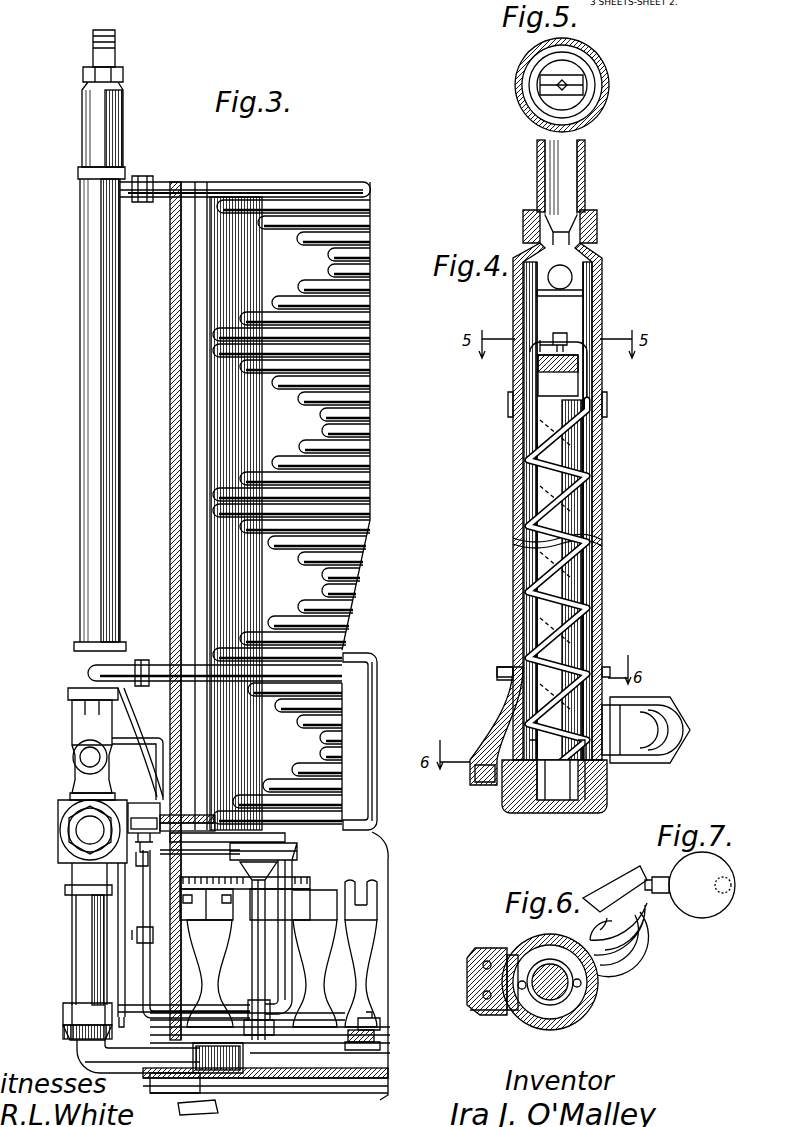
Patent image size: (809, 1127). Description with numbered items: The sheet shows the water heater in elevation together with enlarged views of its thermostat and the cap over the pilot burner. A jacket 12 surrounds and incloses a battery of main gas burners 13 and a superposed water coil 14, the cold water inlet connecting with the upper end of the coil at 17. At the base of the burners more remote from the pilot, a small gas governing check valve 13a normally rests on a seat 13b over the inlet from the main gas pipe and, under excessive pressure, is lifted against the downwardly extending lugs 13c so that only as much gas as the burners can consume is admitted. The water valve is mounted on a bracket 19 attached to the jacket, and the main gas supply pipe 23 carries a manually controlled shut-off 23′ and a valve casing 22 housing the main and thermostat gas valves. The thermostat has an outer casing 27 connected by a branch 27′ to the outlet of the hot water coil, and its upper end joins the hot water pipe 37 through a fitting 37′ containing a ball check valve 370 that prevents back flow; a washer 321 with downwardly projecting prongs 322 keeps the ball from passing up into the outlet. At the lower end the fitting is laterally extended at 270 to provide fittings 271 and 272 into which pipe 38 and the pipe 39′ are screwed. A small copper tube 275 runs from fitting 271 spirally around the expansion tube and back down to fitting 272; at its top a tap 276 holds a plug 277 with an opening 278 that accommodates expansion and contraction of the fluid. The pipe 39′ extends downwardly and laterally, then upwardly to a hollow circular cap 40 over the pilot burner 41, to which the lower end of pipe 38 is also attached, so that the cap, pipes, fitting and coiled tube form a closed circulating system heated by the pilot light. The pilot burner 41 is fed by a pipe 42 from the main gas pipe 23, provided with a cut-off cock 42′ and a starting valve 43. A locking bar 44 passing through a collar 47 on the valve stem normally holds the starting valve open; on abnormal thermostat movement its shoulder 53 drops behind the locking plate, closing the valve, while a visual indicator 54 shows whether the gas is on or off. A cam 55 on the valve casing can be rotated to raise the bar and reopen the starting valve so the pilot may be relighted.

In FIG. 3, the jacket 12 is at (181, 287).
In FIG. 3, the main gas burners 13 is at (228, 962).
In FIG. 3, the gas governing check valve 13a is at (374, 1036).
In FIG. 3, the seats 13b is at (376, 1047).
In FIG. 3, the downwardly extending lugs 13c is at (380, 1022).
In FIG. 3, the water coil 14 is at (370, 440).
In FIG. 3, the coil connection 17 is at (150, 178).
In FIG. 3, the bracket 19 is at (72, 797).
In FIG. 3, the valve casing 22 is at (60, 853).
In FIG. 3, the main gas supply pipe 23 is at (70, 707).
In FIG. 3, the manually controlled shut-off 23′ is at (76, 772).
In FIG. 3, the thermostat casing 27 is at (121, 372).
In FIG. 4, the thermostat casing 27 is at (607, 793).
In FIG. 3, the branch 27′ is at (128, 668).
In FIG. 4, the branch 27′ is at (672, 712).
In FIG. 6, the branch 27′ is at (628, 950).
In FIG. 3, the hot water pipe 37 is at (116, 42).
In FIG. 4, the hot water pipe 37 is at (585, 162).
In FIG. 3, the fitting 37′ is at (124, 122).
In FIG. 4, the fitting 37′ is at (603, 300).
In FIG. 5, the fitting 37′ is at (600, 100).
In FIG. 3, the pipe 38 is at (115, 735).
In FIG. 3, the pipe 39′ is at (118, 942).
In FIG. 3, the cap 40 is at (295, 848).
In FIG. 7, the cap 40 is at (705, 918).
In FIG. 3, the pilot burner 41 is at (240, 865).
In FIG. 3, the pipe 42 is at (150, 1018).
In FIG. 3, the cut-off cock 42′ is at (165, 760).
In FIG. 3, the starting valve 43 is at (136, 862).
In FIG. 3, the locking bar 44 is at (148, 845).
In FIG. 3, the collar 47 is at (130, 876).
In FIG. 3, the shoulder 53 is at (185, 828).
In FIG. 3, the visual indicator 54 is at (185, 817).
In FIG. 3, the cam 55 is at (188, 852).
In FIG. 4, the lateral extension 270 is at (475, 770).
In FIG. 6, the lateral extension 270 is at (468, 983).
In FIG. 6, the fitting 271 is at (487, 961).
In FIG. 4, the fitting 272 is at (485, 782).
In FIG. 6, the fitting 272 is at (478, 1015).
In FIG. 4, the small copper tube 275 is at (530, 380).
In FIG. 5, the small copper tube 275 is at (583, 78).
In FIG. 4, the tap 276 is at (578, 342).
In FIG. 5, the tap 276 is at (585, 92).
In FIG. 6, the tap 276 is at (535, 980).
In FIG. 4, the plug 277 is at (543, 340).
In FIG. 4, the opening 278 is at (560, 333).
In FIG. 5, the opening 278 is at (565, 82).
In FIG. 4, the coupling nut 321 is at (590, 208).
In FIG. 4, the valve seat 322 is at (561, 230).
In FIG. 4, the ball check valve 370 is at (572, 272).